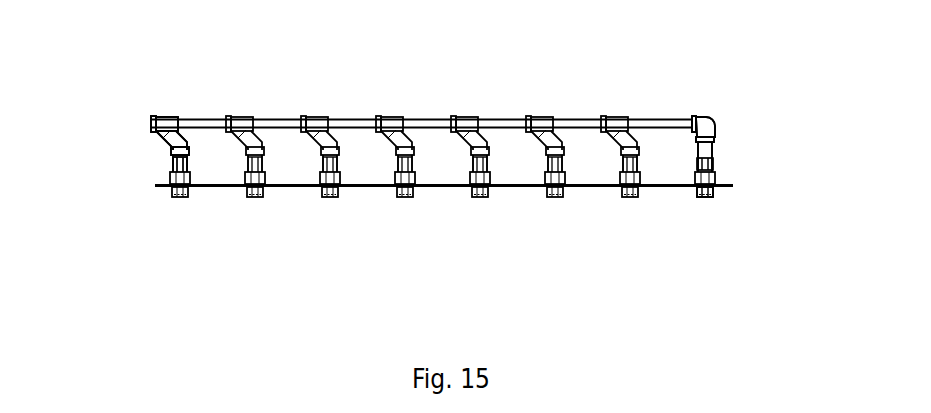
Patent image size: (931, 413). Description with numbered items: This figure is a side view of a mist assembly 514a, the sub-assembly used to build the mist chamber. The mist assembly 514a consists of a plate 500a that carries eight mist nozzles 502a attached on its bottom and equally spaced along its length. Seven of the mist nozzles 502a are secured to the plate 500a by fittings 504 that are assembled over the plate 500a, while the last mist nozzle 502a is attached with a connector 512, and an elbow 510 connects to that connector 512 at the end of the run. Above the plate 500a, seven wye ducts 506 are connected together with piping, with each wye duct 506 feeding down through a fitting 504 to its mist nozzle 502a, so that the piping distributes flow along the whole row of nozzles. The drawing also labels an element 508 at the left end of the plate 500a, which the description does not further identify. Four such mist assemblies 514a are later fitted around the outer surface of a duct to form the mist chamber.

The plate 500a is at (600, 188).
The mist nozzle 502a is at (705, 197).
The fitting 504 is at (172, 150).
The wye duct 506 is at (171, 128).
The mounting plate 508 is at (165, 187).
The elbow 510 is at (712, 122).
The connector 512 is at (707, 147).
The mist assembly 514a is at (305, 188).